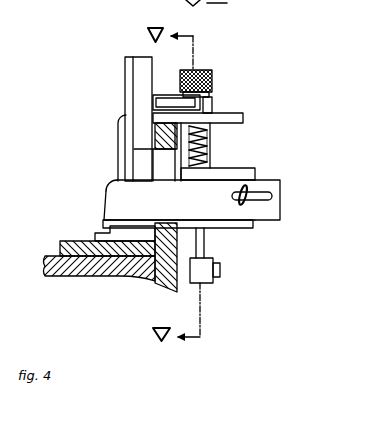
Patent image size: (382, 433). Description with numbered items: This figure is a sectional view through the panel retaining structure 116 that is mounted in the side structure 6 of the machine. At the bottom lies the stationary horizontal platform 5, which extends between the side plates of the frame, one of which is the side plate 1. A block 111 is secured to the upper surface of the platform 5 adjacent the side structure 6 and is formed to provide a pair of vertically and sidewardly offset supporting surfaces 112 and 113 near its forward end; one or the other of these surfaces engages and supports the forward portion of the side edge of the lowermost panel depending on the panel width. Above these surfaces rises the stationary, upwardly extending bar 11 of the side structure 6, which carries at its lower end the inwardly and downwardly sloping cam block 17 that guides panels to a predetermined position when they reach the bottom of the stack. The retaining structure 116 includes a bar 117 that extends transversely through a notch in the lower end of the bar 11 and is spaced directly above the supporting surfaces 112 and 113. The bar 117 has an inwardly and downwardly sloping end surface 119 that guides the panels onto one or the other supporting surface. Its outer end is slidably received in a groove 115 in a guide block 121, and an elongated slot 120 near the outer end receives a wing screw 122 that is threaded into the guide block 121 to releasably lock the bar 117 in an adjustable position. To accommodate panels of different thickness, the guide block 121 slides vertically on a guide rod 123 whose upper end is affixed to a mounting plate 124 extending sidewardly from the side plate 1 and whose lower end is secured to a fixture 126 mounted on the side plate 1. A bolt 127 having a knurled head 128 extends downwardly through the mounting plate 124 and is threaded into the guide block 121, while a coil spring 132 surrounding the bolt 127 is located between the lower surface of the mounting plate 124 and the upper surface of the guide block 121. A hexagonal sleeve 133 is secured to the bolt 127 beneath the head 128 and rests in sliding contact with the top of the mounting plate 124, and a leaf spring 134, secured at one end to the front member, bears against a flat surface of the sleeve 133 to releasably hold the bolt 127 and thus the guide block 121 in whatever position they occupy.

The side plate 1 is at (151, 138).
The platform 5 is at (68, 275).
The side structure 6 is at (112, 109).
The bar 11 is at (141, 78).
The cam block 17 is at (118, 165).
The block 111 is at (108, 248).
The supporting surface 112 is at (110, 205).
The supporting surface 113 is at (102, 226).
The groove 115 is at (245, 223).
The panel retaining structure 116 is at (209, 219).
The bar 117 is at (272, 182).
The end surface 119 is at (113, 184).
The elongated slot 120 is at (157, 193).
The guide block 121 is at (227, 172).
The wing screw 122 is at (255, 212).
The guide rod 123 is at (194, 250).
The mounting plate 124 is at (228, 118).
The fixture 126 is at (203, 272).
The bolt 127 is at (185, 158).
The knurled head 128 is at (200, 72).
The coil spring 132 is at (178, 160).
The sleeve 133 is at (212, 100).
The leaf spring 134 is at (163, 94).